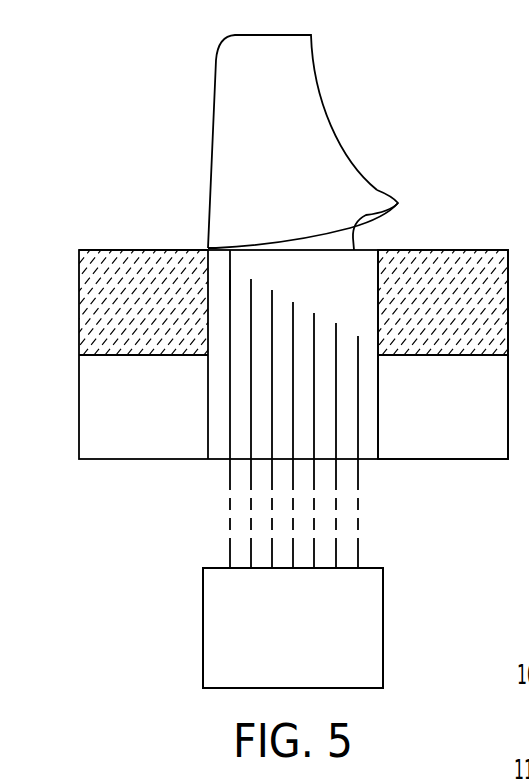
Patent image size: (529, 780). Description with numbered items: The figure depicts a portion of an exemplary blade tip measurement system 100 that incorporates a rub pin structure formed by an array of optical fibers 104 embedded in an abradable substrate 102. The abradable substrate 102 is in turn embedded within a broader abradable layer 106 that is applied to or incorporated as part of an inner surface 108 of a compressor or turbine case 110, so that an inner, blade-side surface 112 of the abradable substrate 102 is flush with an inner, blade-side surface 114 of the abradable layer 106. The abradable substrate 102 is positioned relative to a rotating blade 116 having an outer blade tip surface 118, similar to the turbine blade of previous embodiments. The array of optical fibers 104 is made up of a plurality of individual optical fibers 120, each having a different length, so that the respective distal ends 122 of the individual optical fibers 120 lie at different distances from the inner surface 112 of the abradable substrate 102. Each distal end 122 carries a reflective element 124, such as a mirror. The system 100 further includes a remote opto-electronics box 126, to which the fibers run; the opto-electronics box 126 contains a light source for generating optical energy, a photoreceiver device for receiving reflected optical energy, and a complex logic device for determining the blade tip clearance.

The blade tip measurement system 100 is at (148, 154).
The abradable substrate 102 is at (337, 292).
The array of optical fibers 104 is at (364, 518).
The abradable layer 106 is at (111, 323).
The inner surface 108 is at (158, 355).
The compressor or turbine case 110 is at (103, 424).
The inner, blade-side surface of the abradable substrate 112 is at (371, 201).
The inner, blade-side surface of the abradable layer 114 is at (97, 250).
The rotating blade 116 is at (292, 93).
The outer blade tip surface 118 is at (283, 244).
The individual optical fibers 120 is at (230, 433).
The distal ends 122 is at (232, 284).
The reflective element 124 is at (230, 268).
The opto-electronics box 126 is at (308, 675).